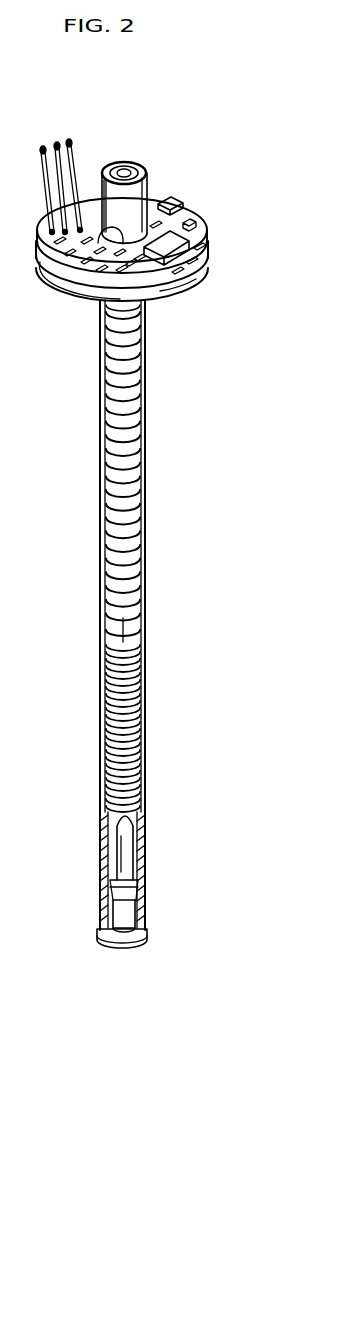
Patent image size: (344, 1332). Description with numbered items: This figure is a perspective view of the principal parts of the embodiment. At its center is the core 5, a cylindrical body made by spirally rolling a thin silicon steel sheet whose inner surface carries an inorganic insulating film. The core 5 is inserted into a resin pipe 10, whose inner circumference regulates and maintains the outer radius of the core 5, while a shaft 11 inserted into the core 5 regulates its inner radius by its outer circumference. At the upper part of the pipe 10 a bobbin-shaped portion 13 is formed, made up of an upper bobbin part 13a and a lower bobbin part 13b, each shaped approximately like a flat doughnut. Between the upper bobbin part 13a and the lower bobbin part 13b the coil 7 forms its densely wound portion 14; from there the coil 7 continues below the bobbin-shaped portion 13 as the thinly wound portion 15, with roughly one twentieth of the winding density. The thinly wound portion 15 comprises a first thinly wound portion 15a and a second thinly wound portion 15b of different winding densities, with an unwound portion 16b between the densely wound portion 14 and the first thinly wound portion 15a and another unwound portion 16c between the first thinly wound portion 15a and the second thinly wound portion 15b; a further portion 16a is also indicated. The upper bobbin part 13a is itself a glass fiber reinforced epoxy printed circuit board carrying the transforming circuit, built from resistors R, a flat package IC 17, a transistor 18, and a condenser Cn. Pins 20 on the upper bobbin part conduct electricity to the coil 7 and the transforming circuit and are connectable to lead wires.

The pins 20 is at (69, 139).
The lead 16a is at (110, 172).
The shaft 11 is at (106, 513).
The core 5 is at (147, 168).
The pipe 10 is at (148, 188).
The condenser Cn is at (180, 201).
The resistors R is at (124, 221).
The transistor 18 is at (197, 224).
The bobbin-shaped portion 13 is at (168, 243).
The upper bobbin part 13a is at (209, 228).
The lower bobbin part 13b is at (238, 257).
The densely wound portion 14 is at (82, 295).
The flat package IC 17 is at (184, 283).
The portion where the coil is not wound 16b is at (140, 312).
The coil 7 is at (148, 433).
The thinly wound portion 15 is at (112, 558).
The first thinly wound portion 15a is at (102, 386).
The portion where the coil is not wound 16c is at (148, 637).
The second thinly wound portion 15b is at (99, 705).